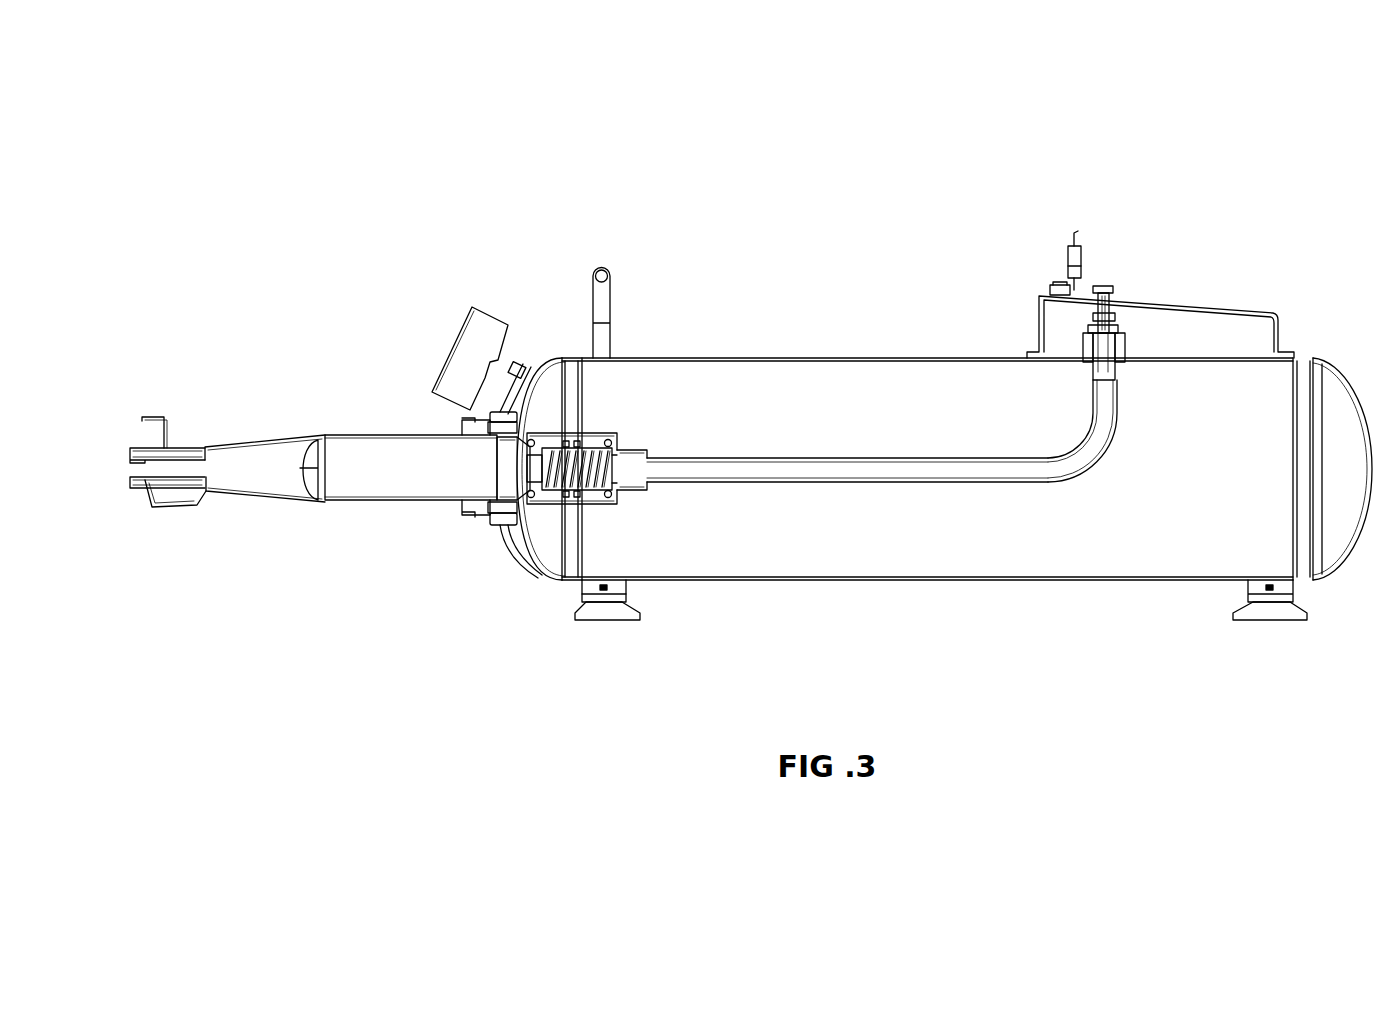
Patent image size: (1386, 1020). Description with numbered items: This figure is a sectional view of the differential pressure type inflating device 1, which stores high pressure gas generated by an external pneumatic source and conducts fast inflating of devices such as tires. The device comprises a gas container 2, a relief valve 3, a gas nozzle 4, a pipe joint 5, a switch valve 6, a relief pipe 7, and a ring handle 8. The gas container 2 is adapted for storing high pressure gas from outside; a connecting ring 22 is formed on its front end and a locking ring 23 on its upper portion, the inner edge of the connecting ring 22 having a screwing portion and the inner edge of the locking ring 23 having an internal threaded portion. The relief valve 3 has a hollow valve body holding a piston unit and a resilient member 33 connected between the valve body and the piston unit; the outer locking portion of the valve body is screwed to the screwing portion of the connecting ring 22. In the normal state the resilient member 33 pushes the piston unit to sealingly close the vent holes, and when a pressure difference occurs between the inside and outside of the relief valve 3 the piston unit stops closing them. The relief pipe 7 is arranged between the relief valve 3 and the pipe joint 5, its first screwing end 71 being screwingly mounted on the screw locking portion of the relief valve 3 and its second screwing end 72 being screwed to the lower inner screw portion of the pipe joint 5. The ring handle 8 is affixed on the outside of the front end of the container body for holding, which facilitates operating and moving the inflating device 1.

The inflating device 1 is at (739, 199).
The gas container 2 is at (838, 323).
The relief valve 3 is at (632, 387).
The gas nozzle 4 is at (357, 402).
The pipe joint 5 is at (1150, 346).
The switch valve 6 is at (1141, 293).
The relief pipe 7 is at (809, 512).
The ring handle 8 is at (600, 268).
The connecting ring 22 is at (501, 378).
The locking ring 23 is at (1054, 334).
The resilient member 33 is at (553, 446).
The first screwing end 71 is at (634, 484).
The second screwing end 72 is at (1113, 385).